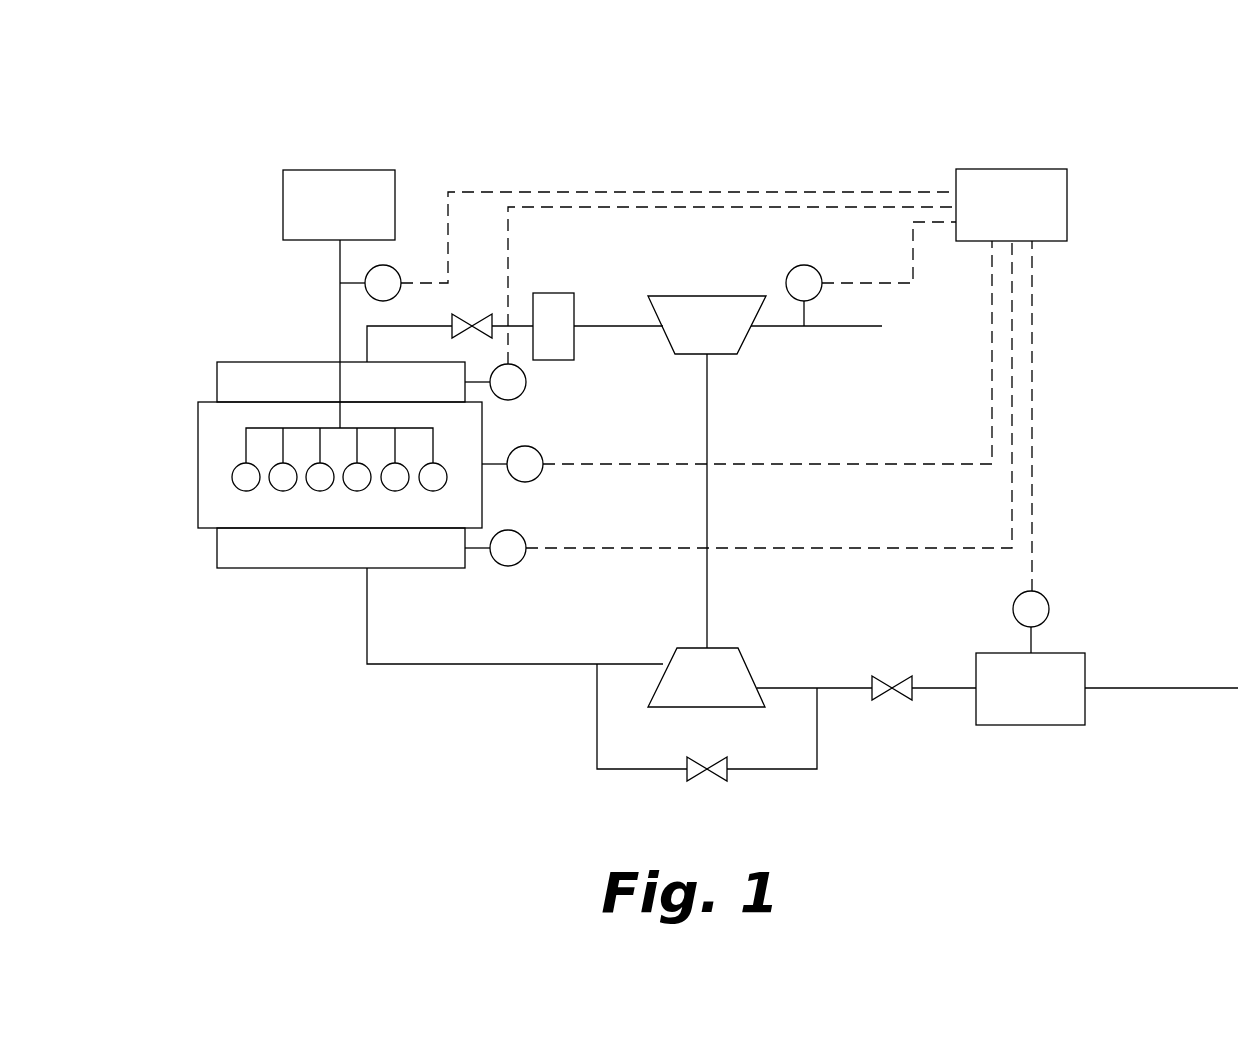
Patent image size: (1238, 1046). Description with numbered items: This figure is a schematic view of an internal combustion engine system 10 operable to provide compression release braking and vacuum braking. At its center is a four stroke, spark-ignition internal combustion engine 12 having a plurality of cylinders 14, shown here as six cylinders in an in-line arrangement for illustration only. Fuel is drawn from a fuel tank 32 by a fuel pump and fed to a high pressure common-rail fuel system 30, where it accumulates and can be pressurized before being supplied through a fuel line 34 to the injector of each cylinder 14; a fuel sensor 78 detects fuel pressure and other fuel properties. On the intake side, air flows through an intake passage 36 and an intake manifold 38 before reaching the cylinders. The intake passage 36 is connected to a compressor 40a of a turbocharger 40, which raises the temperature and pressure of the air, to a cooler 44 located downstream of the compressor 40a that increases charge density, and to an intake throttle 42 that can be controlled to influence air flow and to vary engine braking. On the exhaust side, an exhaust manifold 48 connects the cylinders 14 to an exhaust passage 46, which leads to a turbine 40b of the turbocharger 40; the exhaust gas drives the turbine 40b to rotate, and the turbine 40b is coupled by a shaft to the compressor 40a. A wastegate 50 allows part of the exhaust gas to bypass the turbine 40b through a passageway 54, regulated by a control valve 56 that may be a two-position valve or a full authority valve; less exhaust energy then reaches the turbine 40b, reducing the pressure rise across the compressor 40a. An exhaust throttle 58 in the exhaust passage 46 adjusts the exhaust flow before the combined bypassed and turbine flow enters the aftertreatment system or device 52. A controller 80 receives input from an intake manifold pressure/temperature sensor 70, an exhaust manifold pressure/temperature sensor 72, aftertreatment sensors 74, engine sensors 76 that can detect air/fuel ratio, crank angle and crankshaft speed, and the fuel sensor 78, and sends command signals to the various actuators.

The internal combustion engine system 10 is at (712, 106).
The internal combustion engine 12 is at (190, 502).
The cylinders 14 is at (283, 492).
The common-rail fuel system 30 is at (262, 418).
The fuel tank 32 is at (339, 299).
The fuel line 34 is at (245, 443).
The intake passage 36 is at (866, 328).
The intake manifold 38 is at (272, 368).
The turbocharger 40 is at (746, 501).
The compressor 40a is at (748, 340).
The turbine 40b is at (752, 670).
The intake throttle 42 is at (468, 314).
The cooler 44 is at (554, 293).
The exhaust passage 46 is at (455, 666).
The exhaust manifold 48 is at (240, 568).
The wastegate 50 is at (638, 780).
The aftertreatment system or device 52 is at (1107, 689).
The passageway 54 is at (797, 770).
The control valve 56 is at (700, 781).
The exhaust throttle 58 is at (888, 676).
The intake manifold pressure/temperature sensor 70 is at (522, 393).
The exhaust manifold pressure/temperature sensor 72 is at (520, 562).
The aftertreatment sensors 74 is at (1049, 605).
The engine sensors 76 is at (540, 477).
The fuel sensor 78 is at (398, 272).
The controller 80 is at (734, 380).